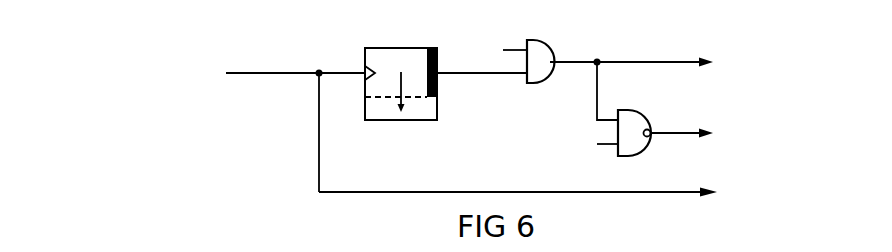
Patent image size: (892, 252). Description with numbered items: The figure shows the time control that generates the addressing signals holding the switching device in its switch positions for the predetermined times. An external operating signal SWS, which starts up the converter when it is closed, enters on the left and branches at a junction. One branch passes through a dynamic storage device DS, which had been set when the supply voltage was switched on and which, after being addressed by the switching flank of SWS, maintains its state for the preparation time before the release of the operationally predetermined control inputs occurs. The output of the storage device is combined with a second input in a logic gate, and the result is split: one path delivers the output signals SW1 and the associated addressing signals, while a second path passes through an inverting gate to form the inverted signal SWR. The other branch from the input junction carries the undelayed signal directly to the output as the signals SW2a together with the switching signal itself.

The switching signal SWS is at (243, 72).
The dynamic storage device DS is at (395, 53).
The output signals SW1, SW2b, SWR SW1 is at (640, 37).
The inverted output signal SWR is at (762, 119).
The output signals SWS, SW2a, PR SW2a is at (652, 192).